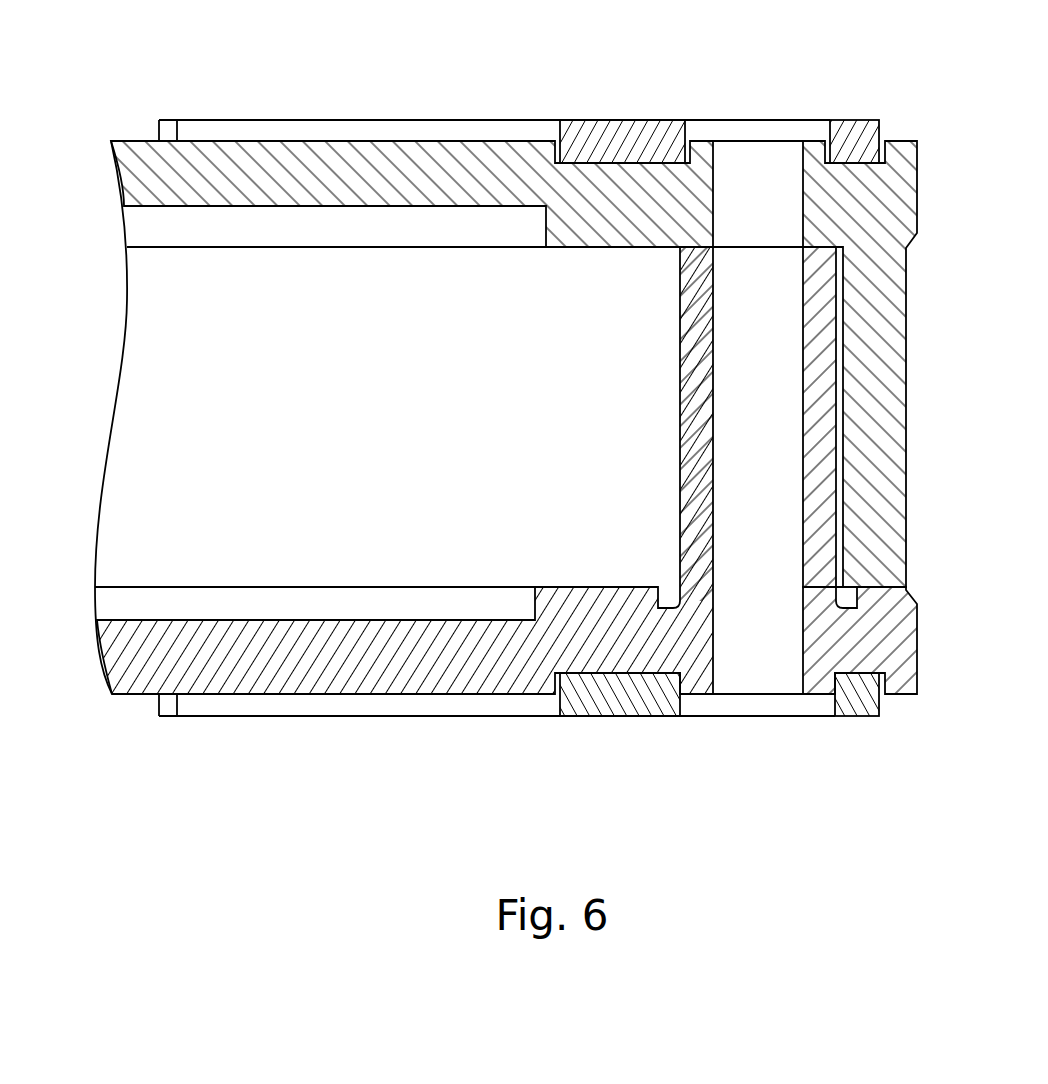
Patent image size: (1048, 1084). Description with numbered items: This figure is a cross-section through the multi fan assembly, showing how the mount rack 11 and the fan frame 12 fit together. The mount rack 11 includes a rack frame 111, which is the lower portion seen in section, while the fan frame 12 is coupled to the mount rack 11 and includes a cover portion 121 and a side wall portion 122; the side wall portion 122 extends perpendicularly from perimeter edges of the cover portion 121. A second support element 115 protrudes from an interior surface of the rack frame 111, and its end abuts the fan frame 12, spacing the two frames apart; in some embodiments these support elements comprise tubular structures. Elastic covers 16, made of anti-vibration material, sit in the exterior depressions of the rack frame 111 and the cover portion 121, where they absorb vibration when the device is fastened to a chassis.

The mount rack 11 is at (928, 651).
The fan frame 12 is at (918, 284).
The rack frame 111 is at (490, 680).
The cover portion 121 is at (503, 160).
The side wall portion 122 is at (893, 367).
The second support element 115 is at (820, 472).
The elastic cover 16 is at (852, 137).